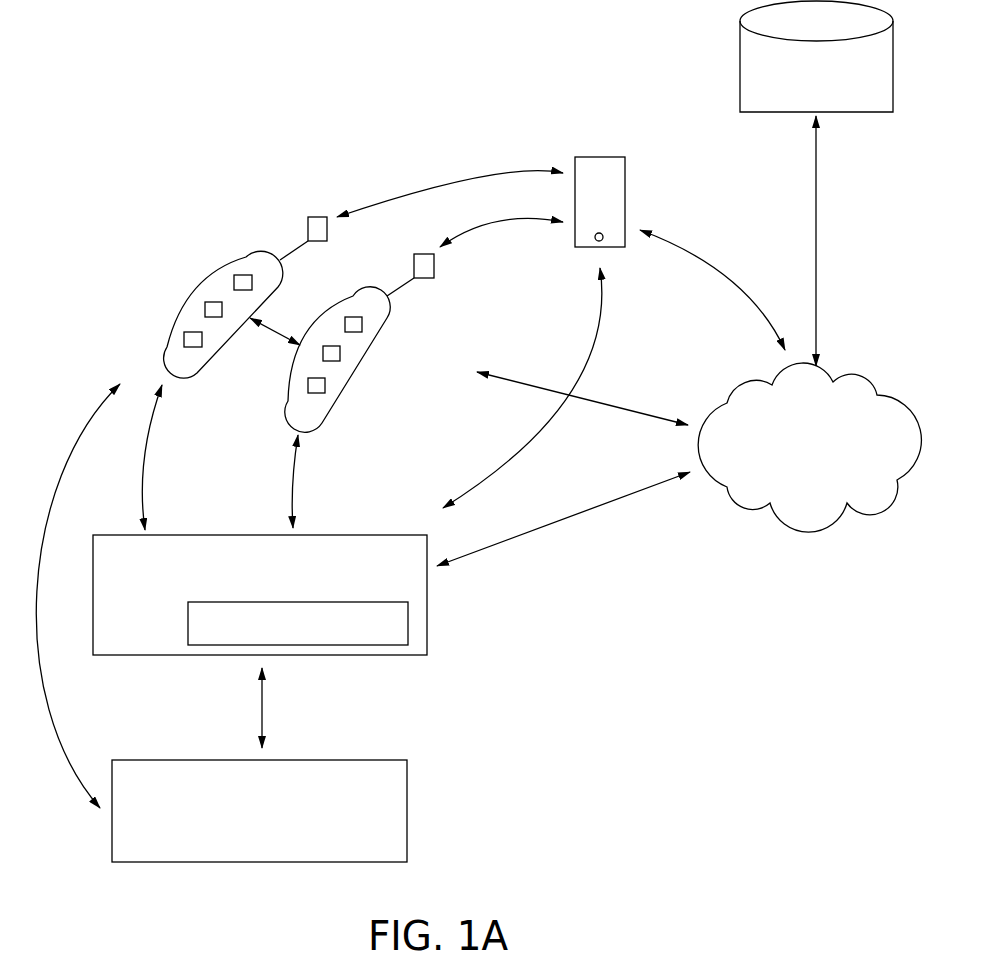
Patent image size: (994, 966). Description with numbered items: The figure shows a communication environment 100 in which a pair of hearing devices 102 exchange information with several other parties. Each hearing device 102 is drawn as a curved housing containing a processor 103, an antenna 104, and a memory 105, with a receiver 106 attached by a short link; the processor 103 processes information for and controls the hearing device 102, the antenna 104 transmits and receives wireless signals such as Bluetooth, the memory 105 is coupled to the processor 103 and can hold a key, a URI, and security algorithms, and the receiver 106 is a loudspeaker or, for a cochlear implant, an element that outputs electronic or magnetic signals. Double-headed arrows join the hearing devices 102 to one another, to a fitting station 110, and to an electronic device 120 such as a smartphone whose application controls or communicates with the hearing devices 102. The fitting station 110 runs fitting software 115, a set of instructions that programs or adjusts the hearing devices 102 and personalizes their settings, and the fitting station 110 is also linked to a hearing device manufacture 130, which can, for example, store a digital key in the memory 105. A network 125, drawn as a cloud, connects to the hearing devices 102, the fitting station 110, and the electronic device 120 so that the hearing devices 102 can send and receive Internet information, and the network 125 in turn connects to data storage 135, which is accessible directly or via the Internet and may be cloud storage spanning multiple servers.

The communication environment 100 is at (133, 124).
The hearing device 102 is at (178, 270).
The processor 103 is at (184, 340).
The antenna 104 is at (205, 309).
The memory 105 is at (243, 275).
The receiver 106 is at (318, 217).
The fitting station 110 is at (427, 594).
The fitting software 115 is at (377, 645).
The electronic device 120 is at (601, 146).
The network 125 is at (789, 537).
The hearing device manufacture 130 is at (408, 810).
The data storage 135 is at (731, 53).